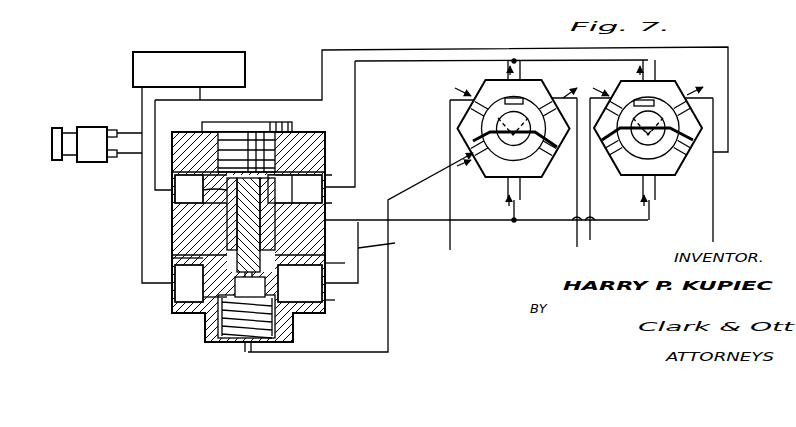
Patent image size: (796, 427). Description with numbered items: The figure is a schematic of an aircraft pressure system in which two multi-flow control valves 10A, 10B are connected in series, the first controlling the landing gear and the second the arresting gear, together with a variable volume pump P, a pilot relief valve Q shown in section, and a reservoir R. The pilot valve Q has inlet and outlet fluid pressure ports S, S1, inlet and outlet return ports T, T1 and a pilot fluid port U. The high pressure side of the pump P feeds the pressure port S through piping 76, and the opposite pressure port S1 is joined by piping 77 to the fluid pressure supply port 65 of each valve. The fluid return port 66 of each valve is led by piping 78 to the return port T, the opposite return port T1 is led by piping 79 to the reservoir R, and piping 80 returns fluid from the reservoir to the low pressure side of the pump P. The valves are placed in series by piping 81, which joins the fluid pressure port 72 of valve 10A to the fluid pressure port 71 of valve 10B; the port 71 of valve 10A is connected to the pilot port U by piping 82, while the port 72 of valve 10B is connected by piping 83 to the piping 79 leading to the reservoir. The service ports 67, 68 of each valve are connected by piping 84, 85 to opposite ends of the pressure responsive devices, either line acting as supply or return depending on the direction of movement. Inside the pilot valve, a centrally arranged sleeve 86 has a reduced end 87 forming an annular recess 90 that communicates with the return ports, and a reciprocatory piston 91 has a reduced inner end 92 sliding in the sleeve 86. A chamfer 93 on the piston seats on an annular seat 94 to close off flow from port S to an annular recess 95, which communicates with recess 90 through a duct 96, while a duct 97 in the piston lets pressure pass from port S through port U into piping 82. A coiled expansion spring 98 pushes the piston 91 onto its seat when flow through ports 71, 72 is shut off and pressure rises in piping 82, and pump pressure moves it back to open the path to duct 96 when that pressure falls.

The reservoir R is at (140, 54).
The variable volume pump P is at (80, 164).
The piping 80 is at (142, 118).
The piping 76 is at (142, 268).
The piping 79 is at (160, 128).
The piping 83 is at (730, 74).
The piping 78 is at (355, 92).
The pilot relief valve Q is at (213, 226).
The annular recess 90 is at (172, 220).
The reciprocatory piston 91 is at (205, 318).
The reduced inner end 92 is at (242, 140).
The outlet return port T1 is at (185, 188).
The inlet return port T is at (325, 175).
The inlet fluid pressure port S is at (165, 286).
The outlet fluid pressure port S1 is at (325, 305).
The duct 96 is at (175, 258).
The annular seat 94 is at (173, 297).
The coiled expansion spring 98 is at (217, 341).
The pilot fluid port U is at (244, 347).
The piping 82 is at (388, 316).
The sleeve 86 is at (328, 228).
The reduced end 87 is at (330, 196).
The chamfer 93 is at (370, 286).
The annular recess 95 is at (337, 271).
The duct 97 is at (336, 300).
The piping 77 is at (387, 254).
The multi-flow control valve 10A is at (575, 133).
The multi-flow control valve 10B is at (689, 83).
The fluid return port 66 is at (518, 80).
The fluid pressure supply port 65 is at (520, 178).
The service port 67 is at (462, 108).
The service port 68 is at (545, 105).
The fluid pressure port 71 is at (480, 158).
The fluid pressure port 72 is at (548, 155).
The piping 85 is at (577, 228).
The piping 84 is at (590, 240).
The piping 81 is at (583, 160).